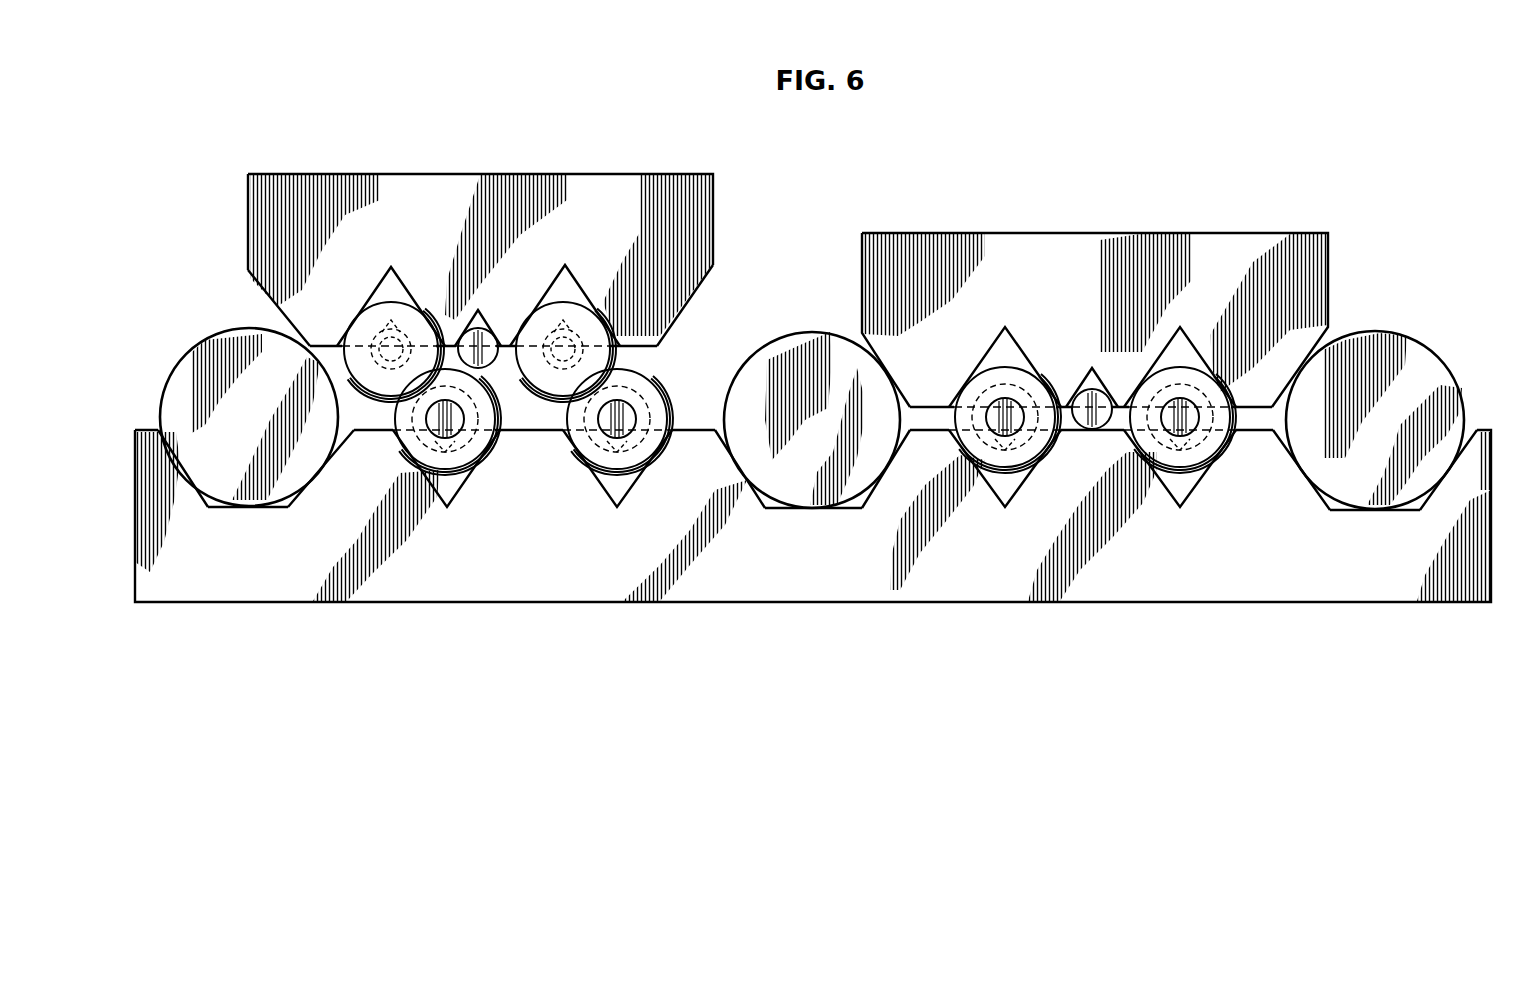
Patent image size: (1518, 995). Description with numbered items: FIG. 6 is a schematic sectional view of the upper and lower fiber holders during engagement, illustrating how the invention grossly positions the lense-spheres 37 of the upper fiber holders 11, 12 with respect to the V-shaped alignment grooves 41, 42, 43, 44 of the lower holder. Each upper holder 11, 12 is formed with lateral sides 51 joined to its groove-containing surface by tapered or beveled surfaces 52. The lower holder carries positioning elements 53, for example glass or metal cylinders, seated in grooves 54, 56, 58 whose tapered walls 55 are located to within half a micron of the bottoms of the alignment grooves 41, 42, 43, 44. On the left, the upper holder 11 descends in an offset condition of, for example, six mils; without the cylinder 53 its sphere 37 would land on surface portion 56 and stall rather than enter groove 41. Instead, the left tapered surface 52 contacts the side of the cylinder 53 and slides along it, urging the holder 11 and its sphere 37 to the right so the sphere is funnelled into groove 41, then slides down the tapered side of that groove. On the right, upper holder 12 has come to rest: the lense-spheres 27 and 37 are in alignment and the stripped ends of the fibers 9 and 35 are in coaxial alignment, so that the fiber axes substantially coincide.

The end portion of fiber 9 is at (430, 412).
The upper fiber holder 11 is at (535, 174).
The upper fiber holder 12 is at (1176, 233).
The stripped fiber end / lense-sphere 27 is at (496, 403).
The unjacketed fiber end 35 is at (390, 358).
The lense-sphere 37 is at (425, 308).
The alignment groove 41 is at (450, 480).
The alignment groove 42 is at (618, 490).
The alignment groove 43 is at (1008, 502).
The alignment groove 44 is at (1181, 504).
The lateral side 51 is at (258, 212).
The tapered surface 52 is at (275, 308).
The positioning element 53 is at (189, 380).
The groove 54 is at (210, 507).
The tapered walls 55 is at (156, 440).
The cylinder-containing groove 56 is at (780, 510).
The groove 58 is at (1345, 508).